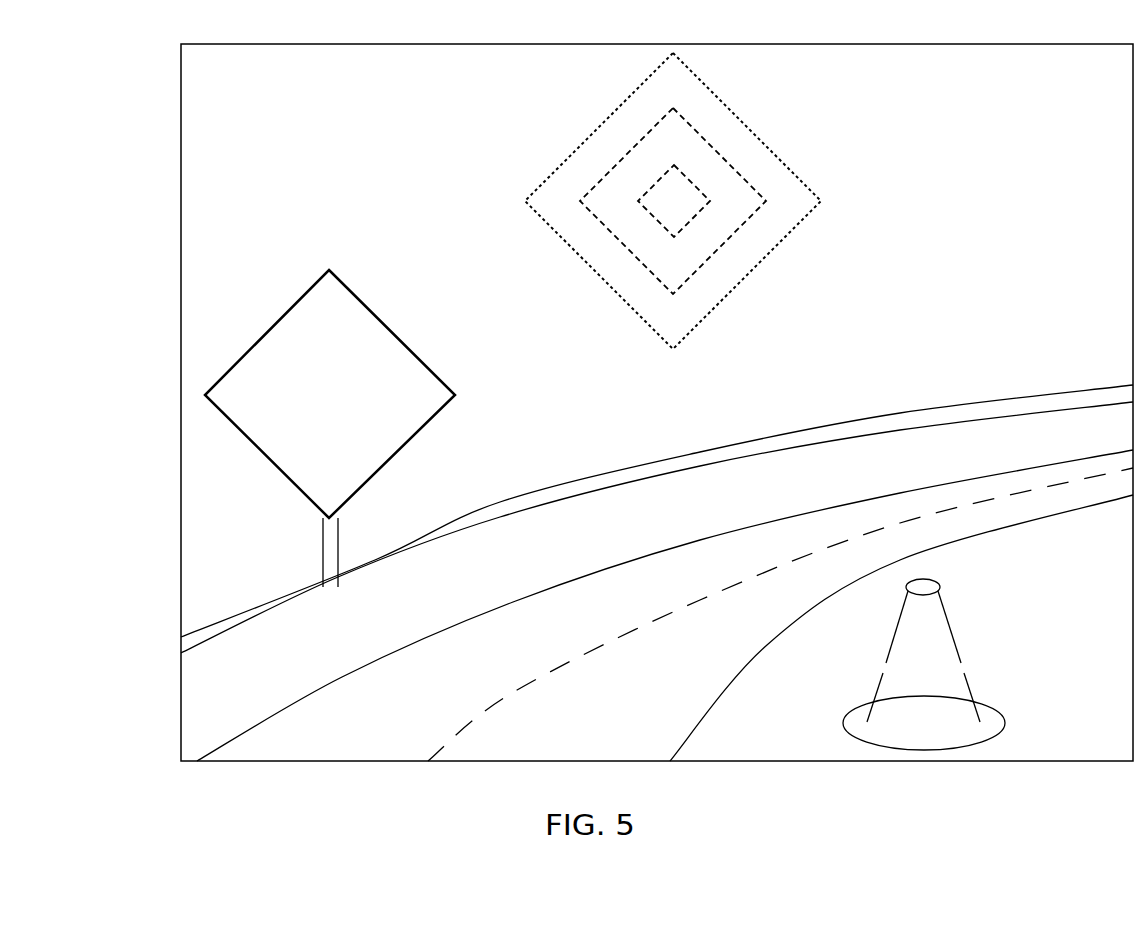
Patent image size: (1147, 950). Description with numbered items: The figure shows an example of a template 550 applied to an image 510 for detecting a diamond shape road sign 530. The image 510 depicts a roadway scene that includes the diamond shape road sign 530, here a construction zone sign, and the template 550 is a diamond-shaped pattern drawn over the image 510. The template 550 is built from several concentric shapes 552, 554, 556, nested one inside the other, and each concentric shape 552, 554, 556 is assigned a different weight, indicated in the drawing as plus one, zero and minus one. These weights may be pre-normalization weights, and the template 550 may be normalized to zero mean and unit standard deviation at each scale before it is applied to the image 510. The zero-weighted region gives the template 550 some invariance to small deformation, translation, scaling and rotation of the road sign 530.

The image 510 is at (120, 220).
The diamond shape road sign 530 is at (392, 328).
The template 550 is at (683, 201).
The concentric shape 552 is at (691, 219).
The middle bounding box (0 region) 554 is at (743, 177).
The concentric shape 556 is at (822, 202).